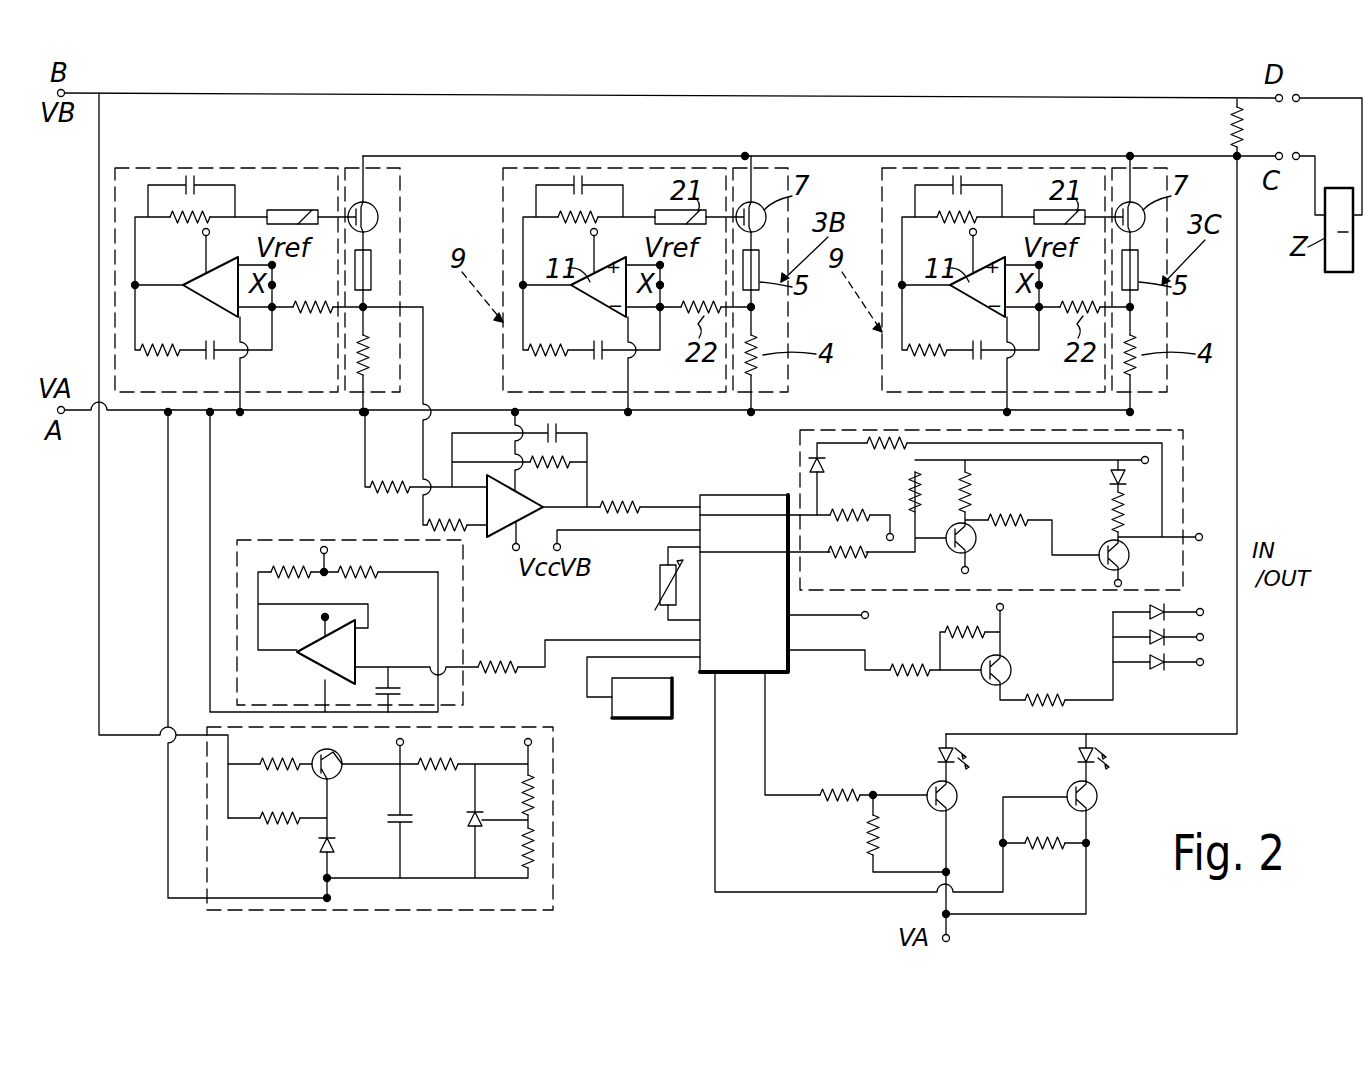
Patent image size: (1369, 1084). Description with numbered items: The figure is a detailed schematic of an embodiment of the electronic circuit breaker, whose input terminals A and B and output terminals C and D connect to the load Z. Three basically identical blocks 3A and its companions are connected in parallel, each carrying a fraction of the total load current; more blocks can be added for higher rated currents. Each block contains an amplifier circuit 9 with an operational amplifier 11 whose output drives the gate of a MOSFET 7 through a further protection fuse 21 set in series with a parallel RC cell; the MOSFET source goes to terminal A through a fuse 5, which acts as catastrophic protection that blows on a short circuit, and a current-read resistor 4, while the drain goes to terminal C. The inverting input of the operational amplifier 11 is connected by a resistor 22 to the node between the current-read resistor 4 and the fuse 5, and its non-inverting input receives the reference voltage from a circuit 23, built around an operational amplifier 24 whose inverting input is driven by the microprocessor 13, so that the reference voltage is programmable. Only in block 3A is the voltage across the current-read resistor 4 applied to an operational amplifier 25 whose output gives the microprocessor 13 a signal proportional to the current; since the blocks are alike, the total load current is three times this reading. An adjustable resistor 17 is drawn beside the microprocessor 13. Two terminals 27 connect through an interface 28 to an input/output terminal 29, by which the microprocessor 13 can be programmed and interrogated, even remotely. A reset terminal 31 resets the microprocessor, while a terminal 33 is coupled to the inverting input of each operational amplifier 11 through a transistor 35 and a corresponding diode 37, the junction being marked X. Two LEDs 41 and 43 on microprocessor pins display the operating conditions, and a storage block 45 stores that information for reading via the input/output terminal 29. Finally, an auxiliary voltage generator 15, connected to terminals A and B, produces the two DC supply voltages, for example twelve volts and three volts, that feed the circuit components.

The block 3A is at (397, 280).
The current-read resistor 4 is at (375, 355).
The fuse 5 is at (372, 282).
The electronic switch 7 is at (376, 210).
The amplifier circuit 9 is at (124, 352).
The operational amplifier 11 is at (202, 282).
The microprocessor 13 is at (761, 596).
The auxiliary voltage generator 15 is at (553, 834).
The potentiometer 17 is at (656, 590).
The protection fuse 21 is at (310, 211).
The resistor 22 is at (316, 316).
The reference voltage circuit 23 is at (468, 603).
The operational amplifier 24 is at (345, 662).
The operational amplifier 25 is at (507, 526).
The terminals 27 is at (805, 552).
The interface 28 is at (800, 449).
The input/output terminal 29 is at (1208, 526).
The reset terminal 31 is at (796, 614).
The terminal 33 is at (806, 650).
The transistor 35 is at (1010, 668).
The diode 37 is at (1162, 606).
The LED 41 is at (937, 751).
The LED 43 is at (1078, 753).
The storage block 45 is at (640, 720).